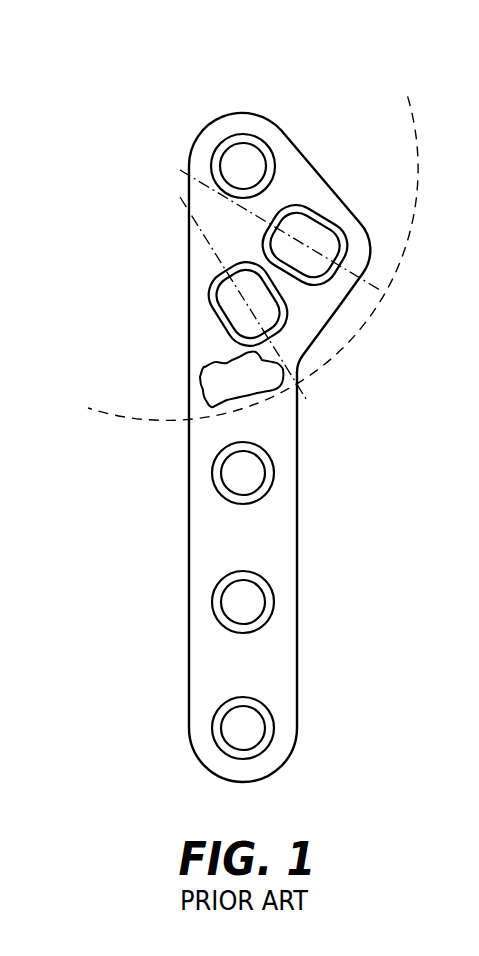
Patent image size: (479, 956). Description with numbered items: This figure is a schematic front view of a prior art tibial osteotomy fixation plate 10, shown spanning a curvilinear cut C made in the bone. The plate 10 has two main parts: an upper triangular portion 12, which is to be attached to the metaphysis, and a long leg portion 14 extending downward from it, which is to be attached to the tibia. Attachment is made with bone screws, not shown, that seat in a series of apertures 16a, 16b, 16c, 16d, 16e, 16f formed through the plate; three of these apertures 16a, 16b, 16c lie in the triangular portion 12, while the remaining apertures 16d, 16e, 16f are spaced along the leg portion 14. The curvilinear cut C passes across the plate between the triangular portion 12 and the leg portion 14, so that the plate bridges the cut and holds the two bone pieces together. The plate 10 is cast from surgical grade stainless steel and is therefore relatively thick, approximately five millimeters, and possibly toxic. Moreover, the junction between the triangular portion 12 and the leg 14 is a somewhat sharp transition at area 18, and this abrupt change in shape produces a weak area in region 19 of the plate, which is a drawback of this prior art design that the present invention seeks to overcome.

The tibial osteotomy fixation plate 10 is at (276, 428).
The triangular portion 12 is at (242, 246).
The leg portion 14 is at (181, 456).
The aperture 16a is at (243, 165).
The aperture 16b is at (308, 233).
The aperture 16c is at (235, 305).
The aperture 16d is at (243, 473).
The aperture 16e is at (243, 602).
The aperture 16f is at (243, 728).
The transition area 18 is at (299, 357).
The weak region 19 is at (245, 375).
The curvilinear cut C is at (403, 112).